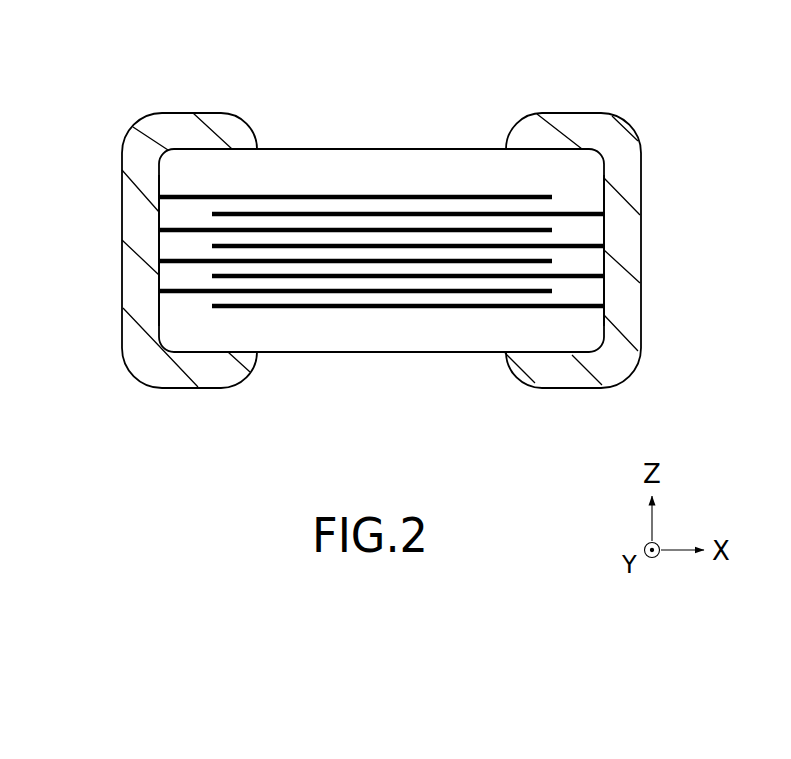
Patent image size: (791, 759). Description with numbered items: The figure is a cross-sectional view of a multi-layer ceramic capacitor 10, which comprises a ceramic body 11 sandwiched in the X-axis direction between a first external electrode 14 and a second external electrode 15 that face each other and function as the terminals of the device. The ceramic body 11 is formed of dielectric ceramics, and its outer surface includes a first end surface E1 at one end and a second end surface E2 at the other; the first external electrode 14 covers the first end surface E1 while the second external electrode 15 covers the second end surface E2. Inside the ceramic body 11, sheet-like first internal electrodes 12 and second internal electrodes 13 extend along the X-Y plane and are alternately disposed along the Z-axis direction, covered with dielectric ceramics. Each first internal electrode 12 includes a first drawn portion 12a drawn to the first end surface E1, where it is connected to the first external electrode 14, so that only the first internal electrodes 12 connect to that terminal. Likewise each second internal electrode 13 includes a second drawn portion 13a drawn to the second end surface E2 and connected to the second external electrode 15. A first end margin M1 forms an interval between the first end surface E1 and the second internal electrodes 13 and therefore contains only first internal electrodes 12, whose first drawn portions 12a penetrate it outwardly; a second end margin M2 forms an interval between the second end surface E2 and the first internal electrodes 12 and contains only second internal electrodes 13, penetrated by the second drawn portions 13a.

The multi-layer ceramic capacitor 10 is at (106, 80).
The ceramic body 11 is at (401, 96).
The first internal electrodes 12 is at (266, 288).
The first drawn portion 12a is at (183, 194).
The second internal electrodes 13 is at (448, 303).
The second drawn portion 13a is at (580, 309).
The first external electrode 14 is at (138, 232).
The second external electrode 15 is at (625, 229).
The first end surface E1 is at (159, 278).
The second end surface E2 is at (604, 272).
The first end margin M1 is at (184, 311).
The second end margin M2 is at (575, 184).